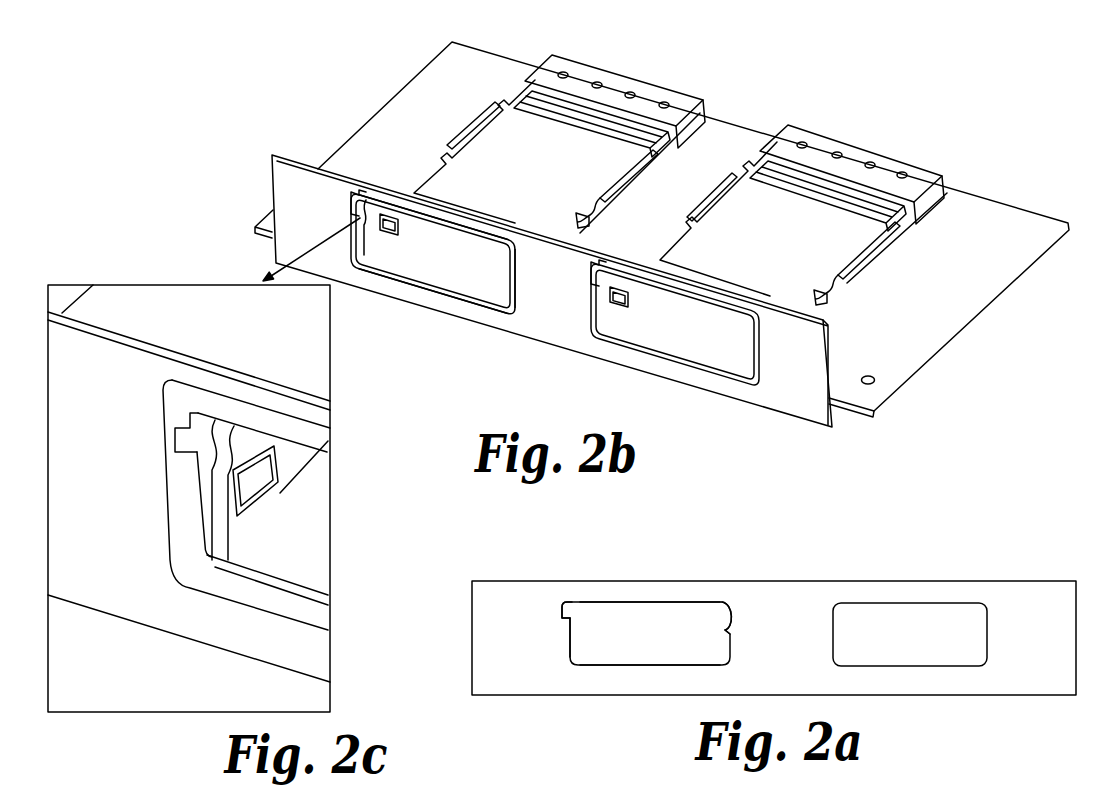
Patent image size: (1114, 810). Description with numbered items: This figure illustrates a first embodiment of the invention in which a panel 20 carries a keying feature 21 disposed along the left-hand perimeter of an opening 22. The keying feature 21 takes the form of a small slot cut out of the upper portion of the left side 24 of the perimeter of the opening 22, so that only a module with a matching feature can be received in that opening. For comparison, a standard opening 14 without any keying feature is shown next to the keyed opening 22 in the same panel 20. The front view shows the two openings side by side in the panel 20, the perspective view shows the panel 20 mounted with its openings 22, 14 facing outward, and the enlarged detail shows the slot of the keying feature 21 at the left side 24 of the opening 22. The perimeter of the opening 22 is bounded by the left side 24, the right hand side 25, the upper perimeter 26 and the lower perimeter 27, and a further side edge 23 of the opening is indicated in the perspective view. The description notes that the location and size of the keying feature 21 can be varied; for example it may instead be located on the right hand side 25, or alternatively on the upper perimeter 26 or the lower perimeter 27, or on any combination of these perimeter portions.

In FIG. 2B, the standard opening 14 is at (702, 345).
In FIG. 2A, the standard opening 14 is at (941, 650).
In FIG. 2B, the front panel 20 is at (785, 400).
In FIG. 2C, the front panel 20 is at (205, 630).
In FIG. 2A, the front panel 20 is at (829, 582).
In FIG. 2B, the keying feature 21 is at (360, 215).
In FIG. 2C, the keying feature 21 is at (173, 430).
In FIG. 2A, the keying feature 21 is at (567, 604).
In FIG. 2B, the opening 22 is at (437, 270).
In FIG. 2C, the opening 22 is at (297, 557).
In FIG. 2A, the opening 22 is at (610, 652).
In FIG. 2B, the side edge of opening 23 is at (507, 287).
In FIG. 2B, the left side 24 is at (357, 245).
In FIG. 2C, the left side 24 is at (197, 518).
In FIG. 2A, the left side 24 is at (570, 636).
In FIG. 2A, the right hand side 25 is at (722, 604).
In FIG. 2B, the upper perimeter 26 is at (480, 237).
In FIG. 2A, the upper perimeter 26 is at (672, 603).
In FIG. 2B, the lower perimeter 27 is at (463, 290).
In FIG. 2A, the lower perimeter 27 is at (664, 664).